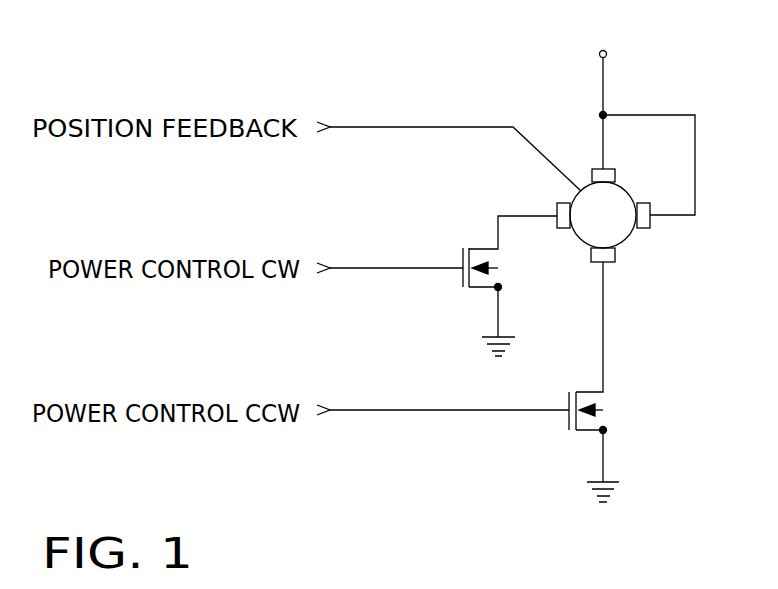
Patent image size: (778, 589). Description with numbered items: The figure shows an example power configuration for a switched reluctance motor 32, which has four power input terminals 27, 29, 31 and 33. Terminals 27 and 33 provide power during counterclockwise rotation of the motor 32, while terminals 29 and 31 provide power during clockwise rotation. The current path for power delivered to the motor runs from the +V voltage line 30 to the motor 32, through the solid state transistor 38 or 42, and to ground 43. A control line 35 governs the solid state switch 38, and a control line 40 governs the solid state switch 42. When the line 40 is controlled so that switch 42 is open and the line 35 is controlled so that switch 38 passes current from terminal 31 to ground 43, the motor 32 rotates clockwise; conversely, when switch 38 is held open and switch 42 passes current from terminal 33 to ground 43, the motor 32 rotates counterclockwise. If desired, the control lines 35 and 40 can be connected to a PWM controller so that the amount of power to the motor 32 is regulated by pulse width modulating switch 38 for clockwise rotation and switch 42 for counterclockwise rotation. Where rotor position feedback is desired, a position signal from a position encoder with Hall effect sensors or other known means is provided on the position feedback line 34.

The power input terminal 27 is at (592, 170).
The power input terminal 29 is at (643, 203).
The +V voltage line 30 is at (603, 90).
The power input terminal 31 is at (567, 203).
The switched reluctance motor 32 is at (620, 240).
The power input terminal 33 is at (597, 260).
The position feedback line 34 is at (416, 127).
The power control CW line 35 is at (392, 270).
The solid state transistor 38 is at (462, 250).
The control line 40 is at (388, 412).
The solid state transistor 42 is at (568, 403).
The ground 43 is at (613, 477).